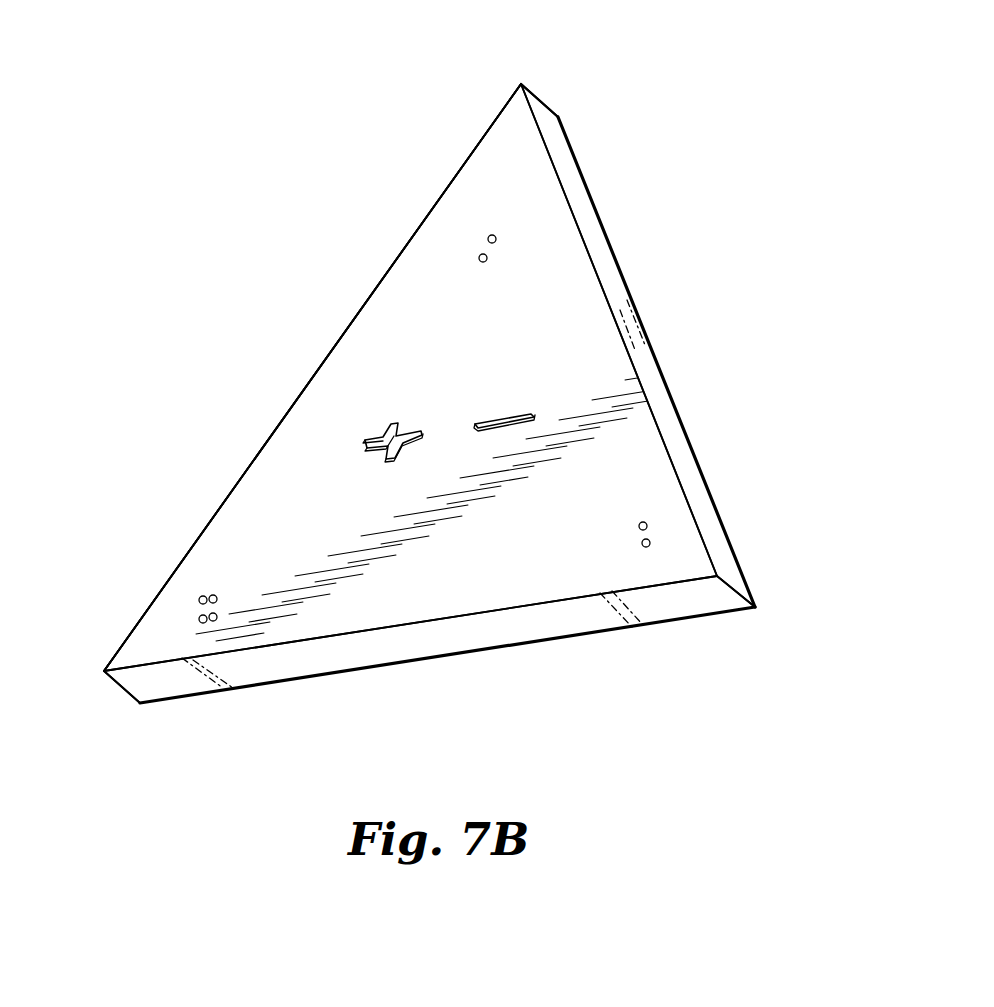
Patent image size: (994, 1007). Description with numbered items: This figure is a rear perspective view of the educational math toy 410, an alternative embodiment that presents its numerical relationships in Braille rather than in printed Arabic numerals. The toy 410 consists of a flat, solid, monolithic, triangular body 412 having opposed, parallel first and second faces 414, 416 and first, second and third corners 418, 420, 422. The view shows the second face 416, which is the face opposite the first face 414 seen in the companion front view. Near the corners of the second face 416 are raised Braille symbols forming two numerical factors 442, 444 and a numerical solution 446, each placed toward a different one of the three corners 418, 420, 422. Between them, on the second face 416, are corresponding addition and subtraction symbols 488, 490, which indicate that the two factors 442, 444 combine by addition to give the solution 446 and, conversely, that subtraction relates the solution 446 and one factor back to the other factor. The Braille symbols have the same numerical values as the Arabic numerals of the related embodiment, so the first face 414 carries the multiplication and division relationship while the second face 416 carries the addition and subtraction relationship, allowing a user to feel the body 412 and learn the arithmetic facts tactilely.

The educational math toy 410 is at (226, 98).
The triangular body 412 is at (350, 323).
The first face 414 is at (318, 438).
The second face 416 is at (245, 492).
The first corner 418 is at (757, 595).
The second corner 420 is at (125, 692).
The third corner 422 is at (538, 97).
The numerical factor 442 is at (650, 540).
The numerical factor 444 is at (199, 599).
The numerical solution 446 is at (496, 237).
The addition symbol 488 is at (400, 413).
The subtraction symbol 490 is at (518, 410).